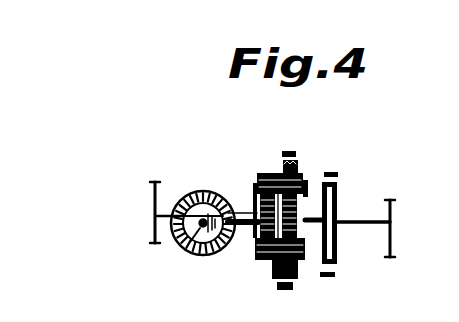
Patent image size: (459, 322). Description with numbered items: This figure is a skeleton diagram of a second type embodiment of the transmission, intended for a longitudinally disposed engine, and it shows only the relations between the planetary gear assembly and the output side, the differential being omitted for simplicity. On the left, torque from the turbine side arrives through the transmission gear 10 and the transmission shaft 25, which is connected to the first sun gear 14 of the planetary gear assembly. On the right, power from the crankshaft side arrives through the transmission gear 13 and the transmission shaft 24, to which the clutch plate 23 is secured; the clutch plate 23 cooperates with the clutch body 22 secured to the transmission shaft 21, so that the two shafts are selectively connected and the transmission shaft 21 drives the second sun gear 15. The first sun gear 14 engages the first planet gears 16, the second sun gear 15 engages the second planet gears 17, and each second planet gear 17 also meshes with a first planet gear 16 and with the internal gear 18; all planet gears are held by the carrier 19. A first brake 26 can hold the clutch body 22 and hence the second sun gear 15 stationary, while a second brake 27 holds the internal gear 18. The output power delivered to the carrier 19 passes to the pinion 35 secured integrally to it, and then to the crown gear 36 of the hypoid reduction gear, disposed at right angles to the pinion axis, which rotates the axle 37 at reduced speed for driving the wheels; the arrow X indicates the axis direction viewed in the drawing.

The transmission gear 10 is at (153, 190).
The transmission gear 13 is at (392, 208).
The first sun gear 14 is at (250, 213).
The second sun gear 15 is at (313, 188).
The first planet gears 16 is at (268, 173).
The second planet gears 17 is at (309, 200).
The internal gear 18 is at (300, 173).
The carrier 19 is at (256, 195).
The transmission shaft 21 is at (303, 248).
The clutch body 22 is at (337, 183).
The clutch plate 23 is at (337, 198).
The transmission shaft 24 is at (362, 223).
The transmission shaft 25 is at (154, 224).
The first brake 26 is at (333, 171).
The second brake 27 is at (290, 150).
The pinion 35 is at (232, 231).
The crown gear 36 is at (200, 255).
The axle 37 is at (190, 242).
The axis X is at (205, 182).